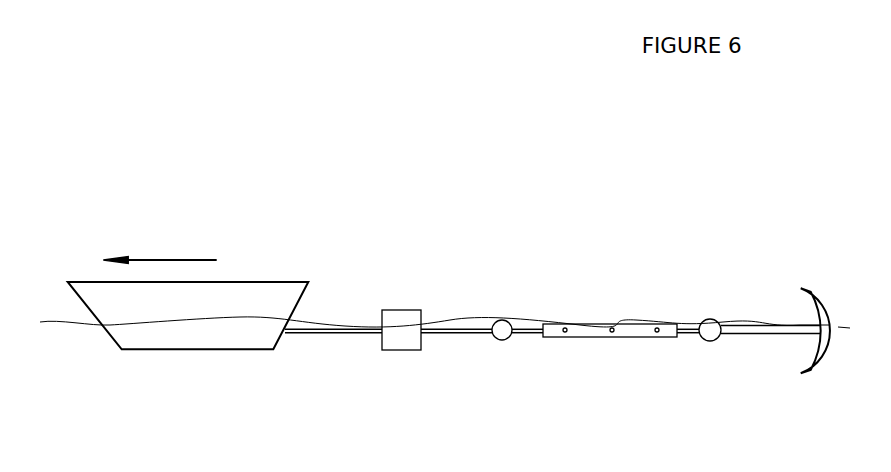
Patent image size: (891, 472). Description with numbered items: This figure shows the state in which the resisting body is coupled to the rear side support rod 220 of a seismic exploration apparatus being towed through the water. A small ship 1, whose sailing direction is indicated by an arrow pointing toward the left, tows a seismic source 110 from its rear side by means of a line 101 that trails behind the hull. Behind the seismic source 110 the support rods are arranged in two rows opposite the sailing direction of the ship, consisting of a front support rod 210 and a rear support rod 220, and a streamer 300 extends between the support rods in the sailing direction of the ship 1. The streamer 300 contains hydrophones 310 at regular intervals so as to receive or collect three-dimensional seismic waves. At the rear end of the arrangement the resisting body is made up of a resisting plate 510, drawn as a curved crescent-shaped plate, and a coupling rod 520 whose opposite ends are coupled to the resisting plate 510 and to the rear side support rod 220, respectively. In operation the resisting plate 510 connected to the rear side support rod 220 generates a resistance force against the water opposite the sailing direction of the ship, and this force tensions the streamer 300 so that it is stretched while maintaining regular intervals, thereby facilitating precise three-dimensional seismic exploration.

The small ship 1 is at (267, 282).
The towing cable 101 is at (332, 335).
The seismic source 110 is at (402, 310).
The front support rod 210 is at (502, 340).
The rear support rod 220 is at (710, 341).
The streamer 300 is at (580, 324).
The hydrophone 310 is at (657, 326).
The resisting plate 510 is at (811, 288).
The coupling rod 520 is at (752, 325).